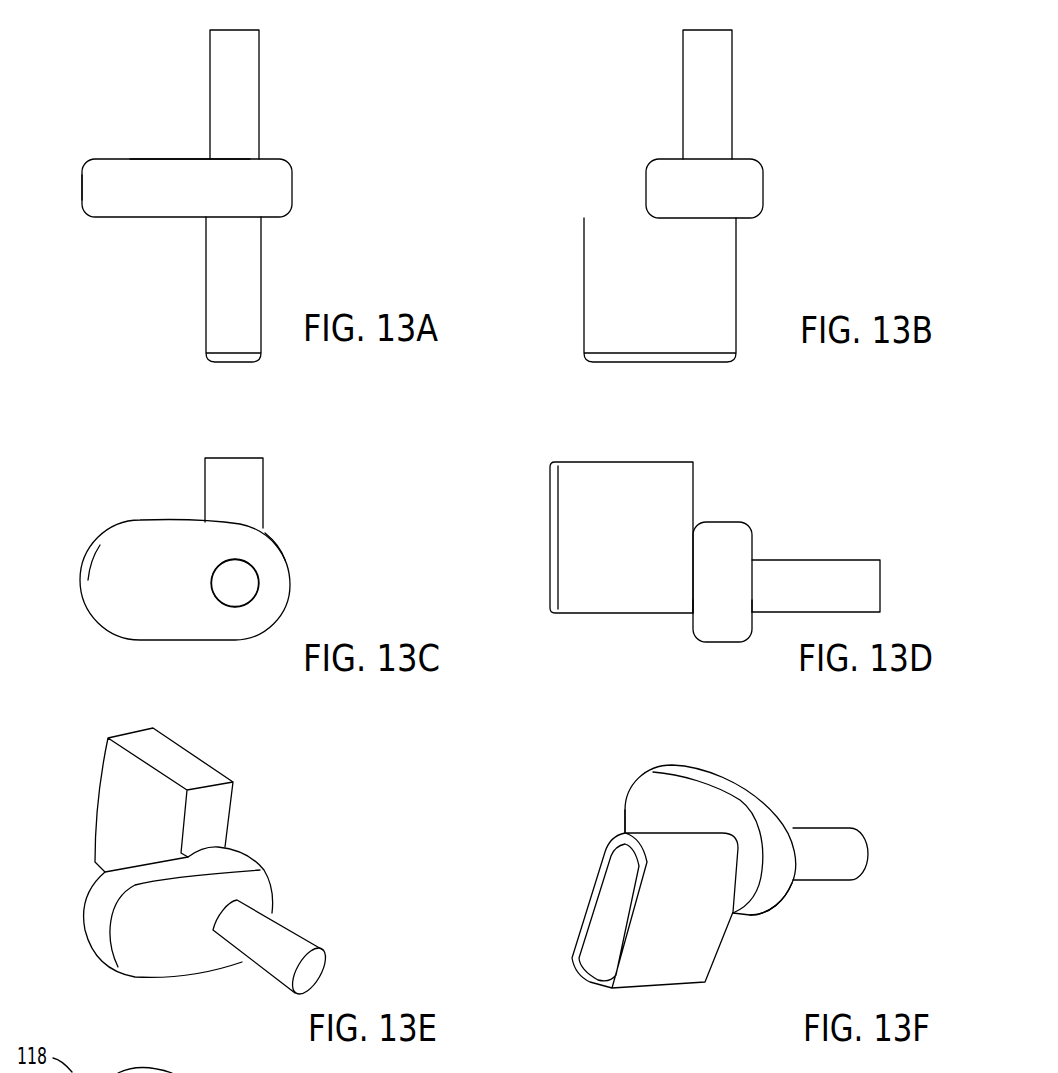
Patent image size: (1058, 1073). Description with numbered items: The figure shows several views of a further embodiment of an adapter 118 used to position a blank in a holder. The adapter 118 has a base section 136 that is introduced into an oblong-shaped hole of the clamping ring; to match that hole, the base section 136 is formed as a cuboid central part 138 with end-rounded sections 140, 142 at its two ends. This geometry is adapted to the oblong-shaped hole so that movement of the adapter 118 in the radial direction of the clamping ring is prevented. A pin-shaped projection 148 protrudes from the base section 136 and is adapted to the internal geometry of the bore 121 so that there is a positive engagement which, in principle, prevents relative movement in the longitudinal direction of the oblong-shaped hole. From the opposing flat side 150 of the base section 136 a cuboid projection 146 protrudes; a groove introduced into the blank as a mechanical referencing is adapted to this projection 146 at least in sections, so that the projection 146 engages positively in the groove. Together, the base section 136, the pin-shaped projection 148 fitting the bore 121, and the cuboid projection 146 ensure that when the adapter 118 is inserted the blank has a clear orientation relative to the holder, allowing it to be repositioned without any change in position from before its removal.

In FIG. 13A, the adapter 118 is at (103, 141).
In FIG. 13B, the adapter 118 is at (781, 166).
In FIG. 13C, the adapter 118 is at (97, 627).
In FIG. 13D, the adapter 118 is at (758, 511).
In FIG. 13E, the adapter 118 is at (294, 846).
In FIG. 13F, the adapter 118 is at (831, 804).
In FIG. 13C, the bore 121 is at (257, 573).
In FIG. 13D, the bore 121 is at (754, 615).
In FIG. 13B, the base section 136 is at (740, 195).
In FIG. 13C, the base section 136 is at (175, 588).
In FIG. 13D, the base section 136 is at (737, 553).
In FIG. 13E, the base section 136 is at (188, 953).
In FIG. 13F, the base section 136 is at (683, 788).
In FIG. 13A, the cuboid central part 138 is at (182, 163).
In FIG. 13F, the cuboid central part 138 is at (703, 802).
In FIG. 13A, the end-rounded section 140 is at (265, 186).
In FIG. 13C, the end-rounded section 140 is at (272, 550).
In FIG. 13F, the end-rounded section 140 is at (780, 883).
In FIG. 13A, the end-rounded section 142 is at (110, 203).
In FIG. 13C, the end-rounded section 142 is at (108, 537).
In FIG. 13F, the end-rounded section 142 is at (628, 805).
In FIG. 13A, the cuboid projection 146 is at (243, 72).
In FIG. 13B, the cuboid projection 146 is at (610, 257).
In FIG. 13C, the cuboid projection 146 is at (213, 483).
In FIG. 13D, the cuboid projection 146 is at (570, 490).
In FIG. 13E, the cuboid projection 146 is at (200, 768).
In FIG. 13F, the cuboid projection 146 is at (707, 952).
In FIG. 13A, the pin-shaped projection 148 is at (217, 299).
In FIG. 13B, the pin-shaped projection 148 is at (715, 68).
In FIG. 13C, the pin-shaped projection 148 is at (237, 593).
In FIG. 13D, the pin-shaped projection 148 is at (816, 586).
In FIG. 13E, the pin-shaped projection 148 is at (283, 942).
In FIG. 13F, the pin-shaped projection 148 is at (852, 863).
In FIG. 13D, the flat side 150 is at (692, 618).